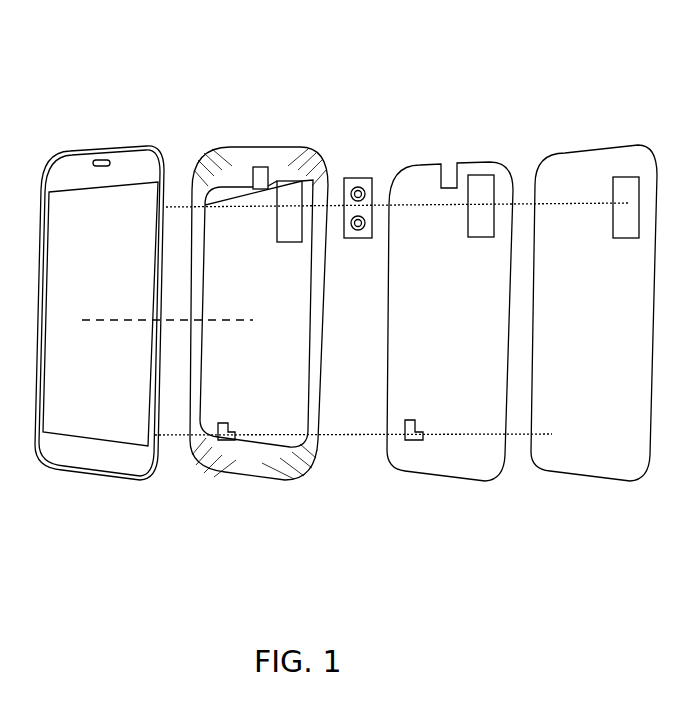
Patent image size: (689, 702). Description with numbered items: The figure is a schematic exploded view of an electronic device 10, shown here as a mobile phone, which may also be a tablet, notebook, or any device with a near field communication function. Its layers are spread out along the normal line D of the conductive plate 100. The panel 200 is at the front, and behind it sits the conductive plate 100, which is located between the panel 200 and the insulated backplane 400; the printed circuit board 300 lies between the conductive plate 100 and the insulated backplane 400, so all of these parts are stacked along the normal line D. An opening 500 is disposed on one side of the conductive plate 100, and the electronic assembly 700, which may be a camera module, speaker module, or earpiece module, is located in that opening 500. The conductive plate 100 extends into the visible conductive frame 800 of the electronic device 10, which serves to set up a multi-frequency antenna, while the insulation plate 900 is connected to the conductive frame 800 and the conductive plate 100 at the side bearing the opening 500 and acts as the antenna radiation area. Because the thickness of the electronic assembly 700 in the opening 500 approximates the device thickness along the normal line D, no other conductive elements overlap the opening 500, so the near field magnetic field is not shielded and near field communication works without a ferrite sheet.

The electronic device 10 is at (453, 56).
The conductive plate 100 is at (277, 314).
The panel 200 is at (97, 461).
The printed circuit board 300 is at (455, 458).
The insulated backplane 400 is at (593, 460).
The opening 500 is at (268, 172).
The electronic assembly 700 is at (356, 178).
The conductive frame 800 is at (316, 342).
The insulation plate 900 is at (229, 166).
The normal line D is at (118, 322).